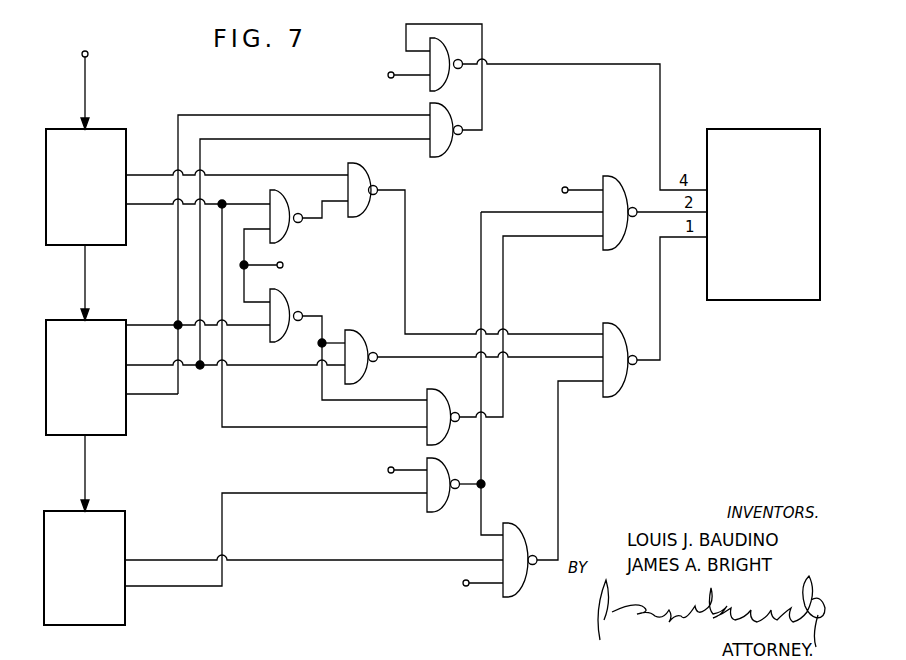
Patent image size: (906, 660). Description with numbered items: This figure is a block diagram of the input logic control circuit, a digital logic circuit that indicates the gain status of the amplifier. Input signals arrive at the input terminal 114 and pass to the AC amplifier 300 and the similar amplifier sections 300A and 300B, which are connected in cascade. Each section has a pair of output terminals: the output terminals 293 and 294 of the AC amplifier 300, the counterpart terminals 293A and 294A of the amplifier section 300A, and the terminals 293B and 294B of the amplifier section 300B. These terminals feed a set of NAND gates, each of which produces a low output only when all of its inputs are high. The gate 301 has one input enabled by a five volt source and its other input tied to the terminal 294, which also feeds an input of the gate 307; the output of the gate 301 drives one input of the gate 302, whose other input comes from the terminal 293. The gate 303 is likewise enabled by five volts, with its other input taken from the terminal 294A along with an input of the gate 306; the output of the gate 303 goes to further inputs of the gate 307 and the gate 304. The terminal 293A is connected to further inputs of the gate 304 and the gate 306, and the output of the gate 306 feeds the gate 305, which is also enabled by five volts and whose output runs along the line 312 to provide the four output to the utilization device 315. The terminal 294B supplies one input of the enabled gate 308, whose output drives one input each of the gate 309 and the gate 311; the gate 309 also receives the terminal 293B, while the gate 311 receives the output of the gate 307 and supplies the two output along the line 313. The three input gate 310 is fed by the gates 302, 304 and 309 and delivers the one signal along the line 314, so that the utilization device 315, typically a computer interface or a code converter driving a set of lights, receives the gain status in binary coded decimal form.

The input terminal 114 is at (88, 54).
The output terminal 293 is at (135, 173).
The output terminal 294 is at (133, 208).
The output terminal 293A is at (134, 362).
The output terminal 294A is at (131, 398).
The output terminal 293B is at (135, 558).
The output terminal 294B is at (130, 590).
The AC amplifier 300 is at (86, 224).
The AC amplifier section 300A is at (86, 415).
The AC amplifier section 300B is at (84, 568).
The gate 301 is at (288, 232).
The gate 302 is at (366, 184).
The gate 303 is at (288, 304).
The gate 304 is at (362, 338).
The gate 305 is at (445, 80).
The gate 306 is at (445, 146).
The gate 307 is at (432, 397).
The gate 308 is at (440, 498).
The gate 309 is at (513, 538).
The gate 310 is at (615, 344).
The gate 311 is at (615, 196).
The line 312 is at (660, 95).
The line 313 is at (651, 218).
The line 314 is at (661, 312).
The utilization device 315 is at (766, 128).